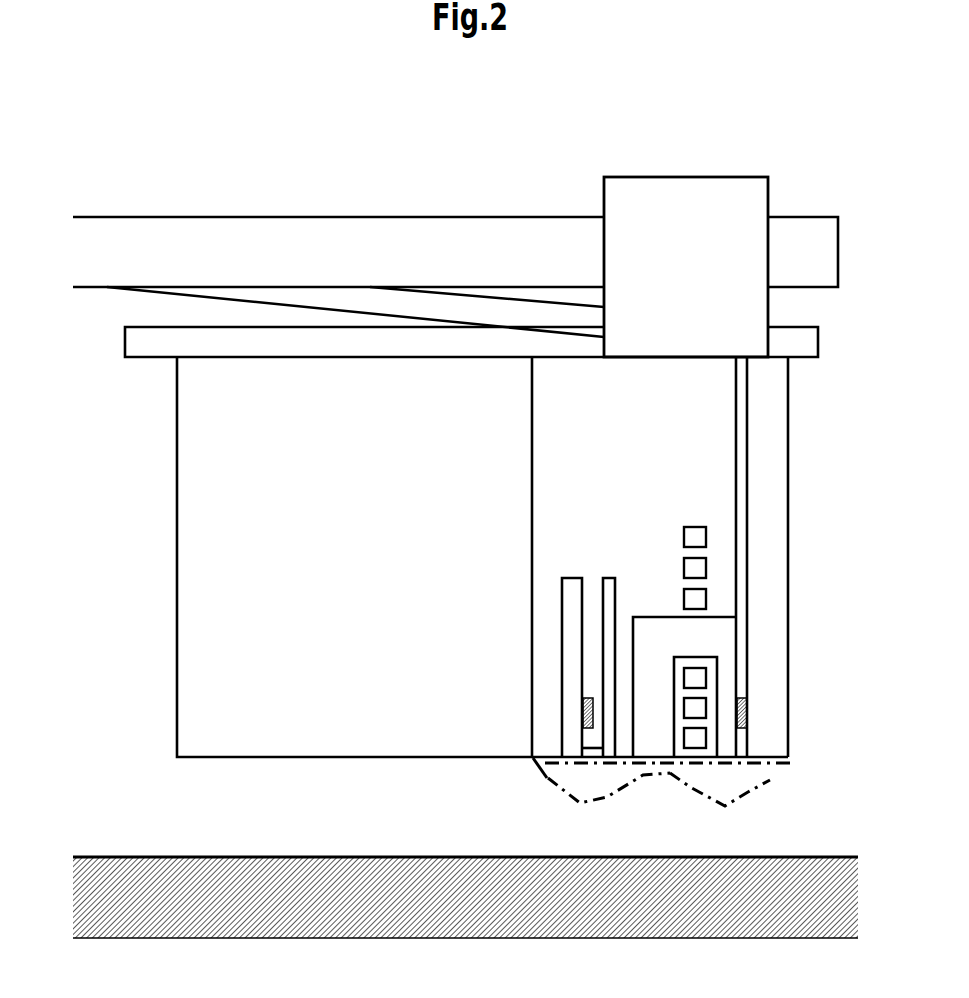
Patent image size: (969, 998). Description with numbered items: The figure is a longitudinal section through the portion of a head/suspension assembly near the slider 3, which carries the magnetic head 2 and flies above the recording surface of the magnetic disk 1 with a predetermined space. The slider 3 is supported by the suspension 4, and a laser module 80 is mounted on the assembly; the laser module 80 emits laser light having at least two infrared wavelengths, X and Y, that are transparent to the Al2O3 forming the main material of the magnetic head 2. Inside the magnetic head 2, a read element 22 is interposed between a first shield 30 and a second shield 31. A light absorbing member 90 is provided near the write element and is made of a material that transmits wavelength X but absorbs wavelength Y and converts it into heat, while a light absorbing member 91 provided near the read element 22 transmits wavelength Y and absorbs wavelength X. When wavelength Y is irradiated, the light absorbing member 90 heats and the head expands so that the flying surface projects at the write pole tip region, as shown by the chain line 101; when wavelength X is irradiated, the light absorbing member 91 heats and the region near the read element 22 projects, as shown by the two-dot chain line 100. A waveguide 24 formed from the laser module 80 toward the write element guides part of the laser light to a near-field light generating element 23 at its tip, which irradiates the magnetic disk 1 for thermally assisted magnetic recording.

The magnetic disk 1 is at (465, 863).
The magnetic head 2 is at (620, 458).
The slider 3 is at (321, 557).
The suspension 4 is at (200, 225).
The read element 22 is at (631, 803).
The near-field light generating element 23 is at (810, 582).
The waveguide 24 is at (803, 557).
The first shield 30 is at (475, 451).
The second shield 31 is at (439, 451).
The laser module 80 is at (686, 229).
The light absorbing member 90 is at (803, 719).
The light absorbing member 91 is at (494, 757).
The two-dot chain line 100 is at (616, 804).
The chain line 101 is at (759, 806).